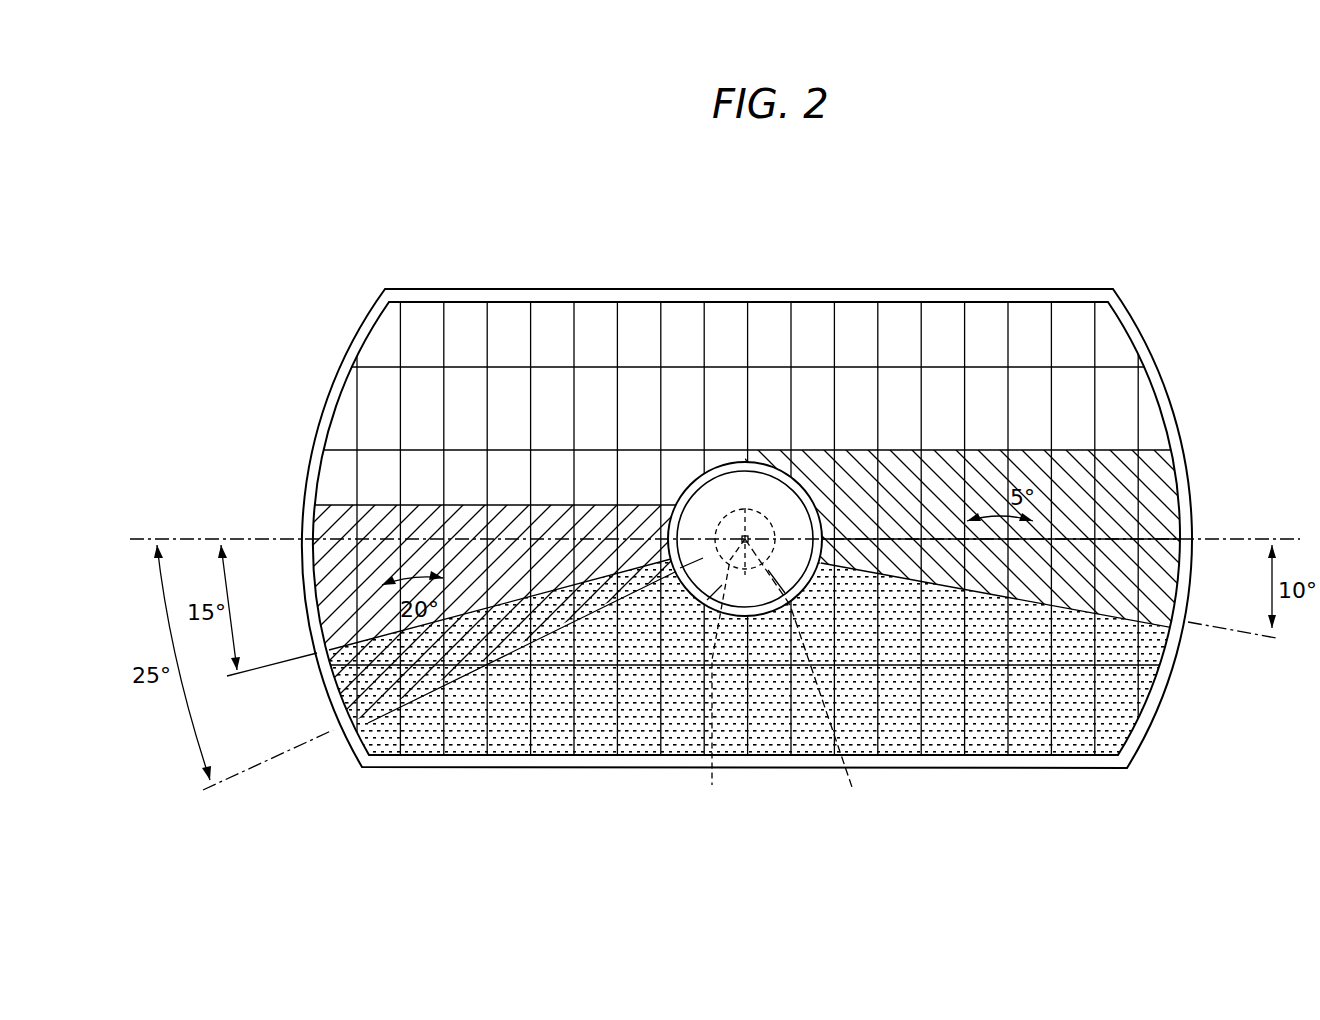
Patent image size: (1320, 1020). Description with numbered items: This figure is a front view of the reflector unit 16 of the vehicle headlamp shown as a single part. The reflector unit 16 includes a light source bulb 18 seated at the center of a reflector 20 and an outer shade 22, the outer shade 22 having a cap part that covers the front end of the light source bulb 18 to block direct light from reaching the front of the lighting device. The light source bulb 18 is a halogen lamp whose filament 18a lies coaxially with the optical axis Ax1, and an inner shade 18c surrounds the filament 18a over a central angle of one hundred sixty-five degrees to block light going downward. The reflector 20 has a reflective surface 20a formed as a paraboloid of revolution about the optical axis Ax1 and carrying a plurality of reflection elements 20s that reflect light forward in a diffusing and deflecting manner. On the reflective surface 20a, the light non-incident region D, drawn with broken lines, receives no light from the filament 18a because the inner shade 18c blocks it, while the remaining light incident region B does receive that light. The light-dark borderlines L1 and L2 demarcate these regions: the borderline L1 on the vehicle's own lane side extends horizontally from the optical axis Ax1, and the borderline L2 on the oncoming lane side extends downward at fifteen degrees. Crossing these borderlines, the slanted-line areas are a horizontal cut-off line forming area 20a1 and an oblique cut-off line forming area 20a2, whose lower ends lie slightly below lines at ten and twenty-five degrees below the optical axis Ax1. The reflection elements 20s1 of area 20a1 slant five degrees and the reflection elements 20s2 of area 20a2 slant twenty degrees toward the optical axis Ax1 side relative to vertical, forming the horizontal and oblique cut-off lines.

The reflector unit 16 is at (1032, 231).
The light source bulb 18 is at (738, 498).
The filament 18a is at (716, 506).
The shade 18c is at (719, 678).
The reflector 20 is at (872, 287).
The reflective surface 20a is at (725, 332).
The horizontal cut-off line forming area 20a1 is at (1149, 447).
The oblique cut-off line forming area 20a2 is at (346, 500).
The reflection elements 20s is at (508, 337).
The reflection elements of the horizontal cut-off line forming area 20s1 is at (1068, 477).
The reflection elements of the oblique cut-off line forming area 20s2 is at (392, 522).
The outer shade 22 is at (806, 472).
The light incident region B is at (1118, 405).
The light non-incident region D is at (1115, 679).
The light-dark borderline L1 is at (1132, 539).
The light-dark borderline L2 is at (388, 588).
The optical axis Ax1 is at (811, 678).